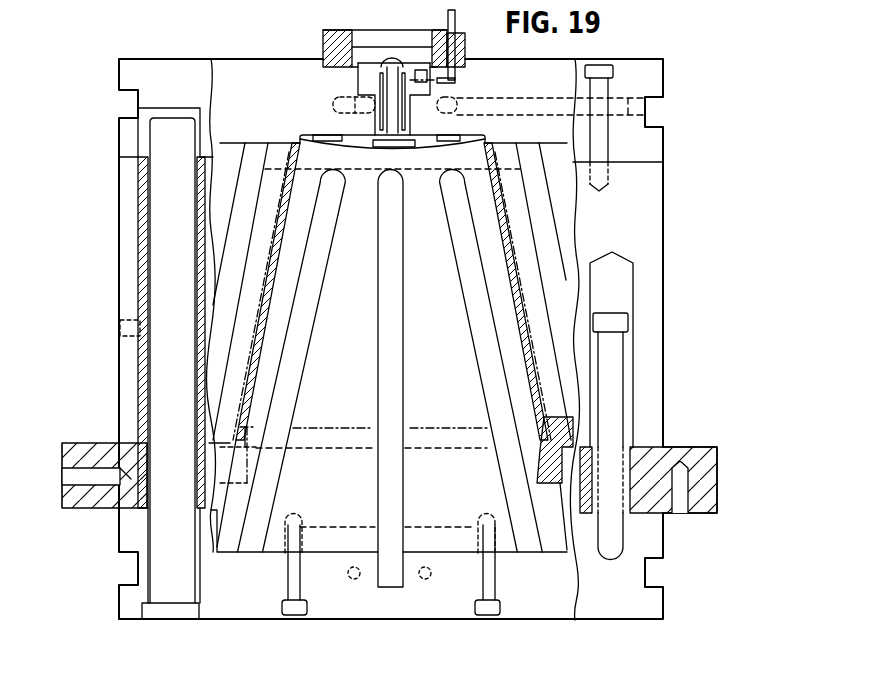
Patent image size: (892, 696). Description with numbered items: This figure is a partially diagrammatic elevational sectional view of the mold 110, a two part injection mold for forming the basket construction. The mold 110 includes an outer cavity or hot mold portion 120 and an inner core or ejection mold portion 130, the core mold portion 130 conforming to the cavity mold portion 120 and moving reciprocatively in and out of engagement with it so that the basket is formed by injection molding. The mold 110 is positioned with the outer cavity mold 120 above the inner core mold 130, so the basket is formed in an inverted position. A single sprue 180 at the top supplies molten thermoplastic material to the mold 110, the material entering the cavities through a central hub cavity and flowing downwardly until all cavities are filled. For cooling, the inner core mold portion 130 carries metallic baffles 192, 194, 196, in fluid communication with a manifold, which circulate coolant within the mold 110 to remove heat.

The mold 110 is at (695, 59).
The outer cavity or hot mold portion 120 is at (672, 252).
The inner core or ejection mold portion 130 is at (331, 562).
The sprue 180 is at (314, 26).
The baffle 192 is at (251, 543).
The baffle 194 is at (388, 580).
The baffle 196 is at (533, 545).